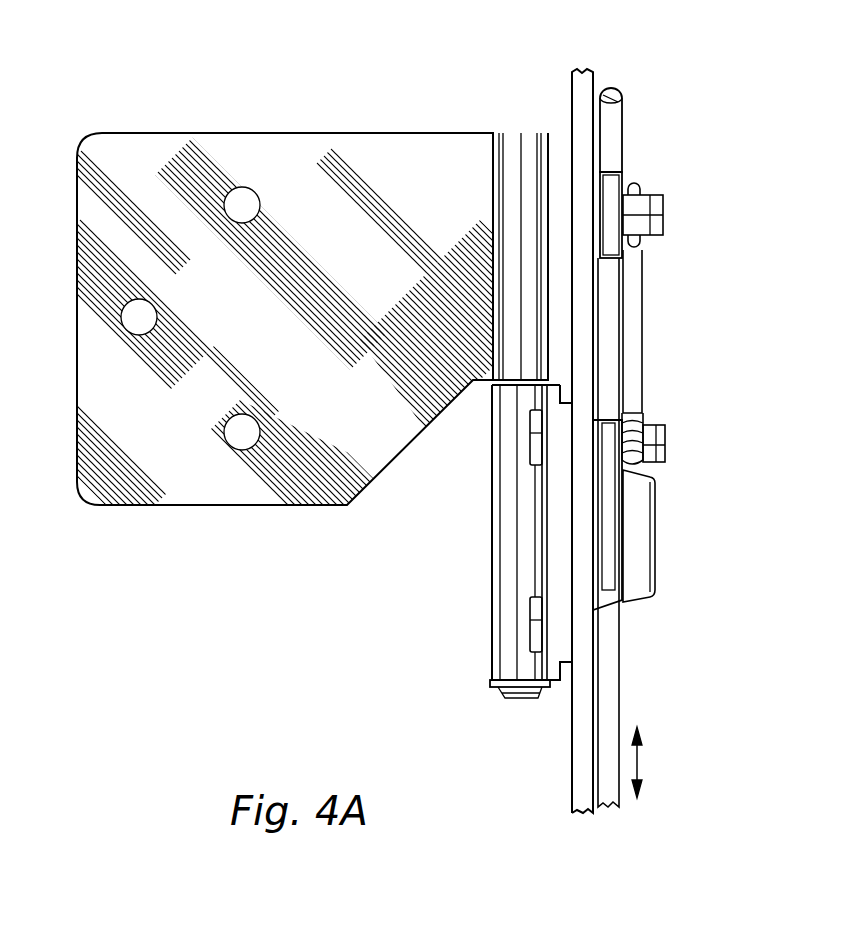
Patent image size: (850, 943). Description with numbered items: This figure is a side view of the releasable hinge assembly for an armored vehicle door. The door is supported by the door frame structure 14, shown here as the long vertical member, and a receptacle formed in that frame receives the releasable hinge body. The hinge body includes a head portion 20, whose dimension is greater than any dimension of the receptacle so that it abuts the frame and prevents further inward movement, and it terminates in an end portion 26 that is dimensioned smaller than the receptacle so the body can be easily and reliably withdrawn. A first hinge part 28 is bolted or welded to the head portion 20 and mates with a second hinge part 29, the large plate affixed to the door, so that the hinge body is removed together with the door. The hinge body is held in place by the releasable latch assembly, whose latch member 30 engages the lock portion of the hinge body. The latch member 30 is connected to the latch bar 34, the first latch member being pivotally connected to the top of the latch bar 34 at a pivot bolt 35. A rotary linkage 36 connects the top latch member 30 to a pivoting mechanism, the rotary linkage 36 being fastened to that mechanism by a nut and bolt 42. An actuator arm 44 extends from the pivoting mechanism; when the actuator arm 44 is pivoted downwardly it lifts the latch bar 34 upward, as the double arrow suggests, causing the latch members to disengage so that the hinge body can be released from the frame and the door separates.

The door frame structure 14 is at (590, 70).
The head portion 20 is at (500, 541).
The end portion 26 is at (655, 506).
The first hinge part 28 is at (560, 540).
The second hinge part 29 is at (295, 132).
The latch member 30 is at (605, 545).
The latch bar 34 is at (618, 700).
The pivot bolt 35 is at (667, 437).
The rotary linkage 36 is at (642, 340).
The nut and bolt 42 is at (660, 205).
The actuator arm 44 is at (618, 140).